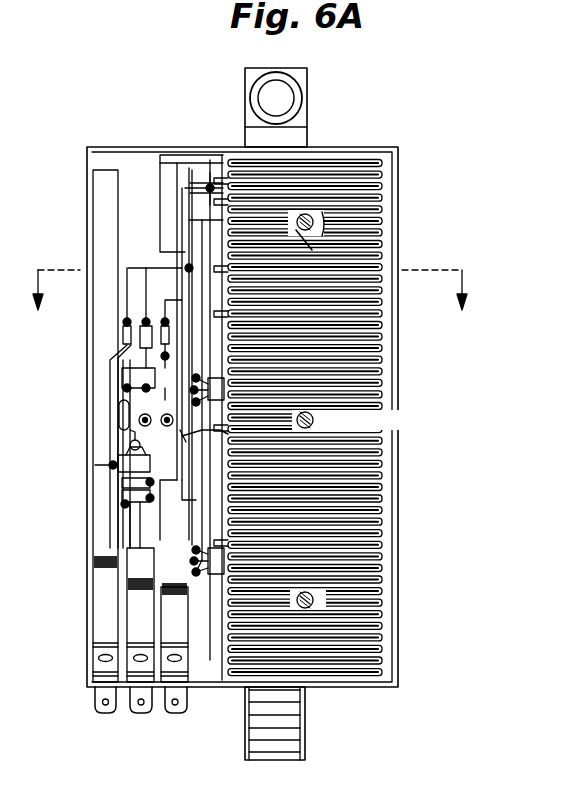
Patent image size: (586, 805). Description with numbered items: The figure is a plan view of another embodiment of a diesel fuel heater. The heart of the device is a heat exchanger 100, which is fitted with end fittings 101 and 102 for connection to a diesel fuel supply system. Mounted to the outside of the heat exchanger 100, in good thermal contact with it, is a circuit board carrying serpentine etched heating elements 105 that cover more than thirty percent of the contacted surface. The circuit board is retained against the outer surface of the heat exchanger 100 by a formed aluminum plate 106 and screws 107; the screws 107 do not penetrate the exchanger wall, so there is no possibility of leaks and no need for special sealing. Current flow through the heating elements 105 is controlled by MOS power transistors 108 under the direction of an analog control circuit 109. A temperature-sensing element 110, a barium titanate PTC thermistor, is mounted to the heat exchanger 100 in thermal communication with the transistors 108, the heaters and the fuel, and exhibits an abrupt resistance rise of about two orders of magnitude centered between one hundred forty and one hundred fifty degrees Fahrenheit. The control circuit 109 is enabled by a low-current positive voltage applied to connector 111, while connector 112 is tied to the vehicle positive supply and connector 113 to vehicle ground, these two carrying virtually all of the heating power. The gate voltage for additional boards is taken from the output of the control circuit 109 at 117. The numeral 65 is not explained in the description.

The heat exchanger 100 is at (420, 150).
The end fitting 101 is at (310, 96).
The end fitting 102 is at (305, 732).
The serpentine etched heating element 105 is at (380, 228).
The formed aluminum plate 106 is at (120, 160).
The screw 107 is at (380, 255).
The MOS power transistor 108 is at (224, 390).
The control circuit 109 is at (104, 498).
The temperature-sensing element 110 is at (125, 470).
The connector 111 is at (102, 714).
The connector 112 is at (138, 714).
The connector 113 is at (176, 714).
The output of control circuit 117 is at (95, 575).
The wire lead 65 is at (192, 494).